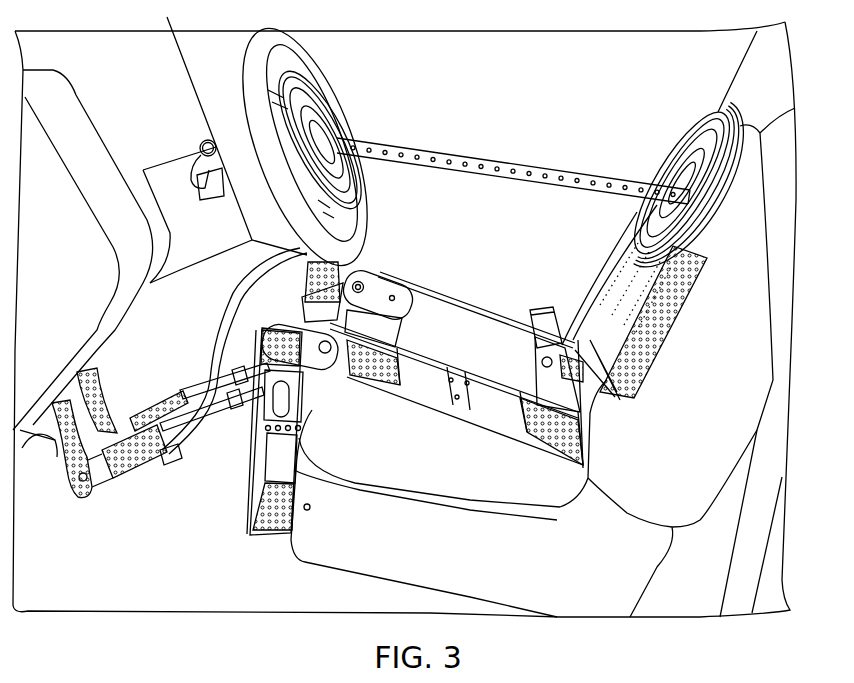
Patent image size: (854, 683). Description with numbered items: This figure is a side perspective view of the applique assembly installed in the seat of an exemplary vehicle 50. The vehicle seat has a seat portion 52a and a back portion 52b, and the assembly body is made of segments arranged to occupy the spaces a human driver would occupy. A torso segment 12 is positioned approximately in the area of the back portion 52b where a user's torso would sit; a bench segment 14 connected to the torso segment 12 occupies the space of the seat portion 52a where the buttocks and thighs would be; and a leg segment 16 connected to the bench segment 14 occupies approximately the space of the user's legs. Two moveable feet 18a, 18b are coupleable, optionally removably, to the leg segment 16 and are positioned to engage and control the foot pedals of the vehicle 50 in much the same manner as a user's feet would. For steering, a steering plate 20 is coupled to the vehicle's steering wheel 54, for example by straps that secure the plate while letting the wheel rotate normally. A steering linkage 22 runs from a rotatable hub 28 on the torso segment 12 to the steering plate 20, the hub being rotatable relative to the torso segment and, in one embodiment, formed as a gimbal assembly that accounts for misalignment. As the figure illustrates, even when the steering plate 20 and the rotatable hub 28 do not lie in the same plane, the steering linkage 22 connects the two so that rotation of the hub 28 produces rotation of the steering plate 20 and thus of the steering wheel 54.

The vehicle 50 is at (45, 248).
The steering wheel 54 is at (260, 48).
The steering plate 20 is at (297, 78).
The steering linkage 22 is at (393, 143).
The rotatable hub 28 is at (693, 143).
The back portion 52b is at (770, 203).
The seat portion 52a is at (377, 430).
The torso segment 12 is at (663, 287).
The bench segment 14 is at (463, 318).
The leg segment 16 is at (255, 528).
The moveable foot 18a is at (83, 382).
The moveable foot 18b is at (103, 465).